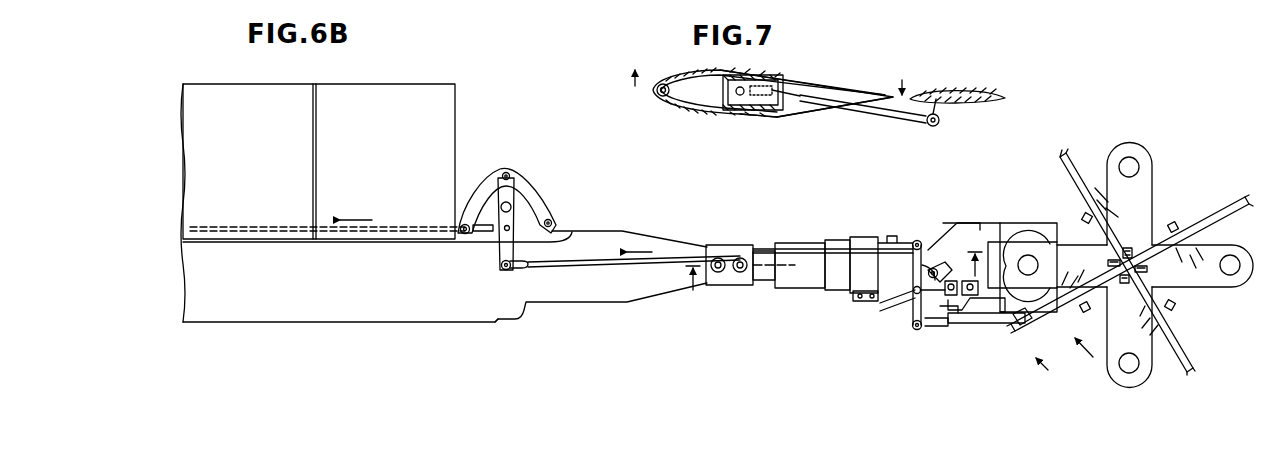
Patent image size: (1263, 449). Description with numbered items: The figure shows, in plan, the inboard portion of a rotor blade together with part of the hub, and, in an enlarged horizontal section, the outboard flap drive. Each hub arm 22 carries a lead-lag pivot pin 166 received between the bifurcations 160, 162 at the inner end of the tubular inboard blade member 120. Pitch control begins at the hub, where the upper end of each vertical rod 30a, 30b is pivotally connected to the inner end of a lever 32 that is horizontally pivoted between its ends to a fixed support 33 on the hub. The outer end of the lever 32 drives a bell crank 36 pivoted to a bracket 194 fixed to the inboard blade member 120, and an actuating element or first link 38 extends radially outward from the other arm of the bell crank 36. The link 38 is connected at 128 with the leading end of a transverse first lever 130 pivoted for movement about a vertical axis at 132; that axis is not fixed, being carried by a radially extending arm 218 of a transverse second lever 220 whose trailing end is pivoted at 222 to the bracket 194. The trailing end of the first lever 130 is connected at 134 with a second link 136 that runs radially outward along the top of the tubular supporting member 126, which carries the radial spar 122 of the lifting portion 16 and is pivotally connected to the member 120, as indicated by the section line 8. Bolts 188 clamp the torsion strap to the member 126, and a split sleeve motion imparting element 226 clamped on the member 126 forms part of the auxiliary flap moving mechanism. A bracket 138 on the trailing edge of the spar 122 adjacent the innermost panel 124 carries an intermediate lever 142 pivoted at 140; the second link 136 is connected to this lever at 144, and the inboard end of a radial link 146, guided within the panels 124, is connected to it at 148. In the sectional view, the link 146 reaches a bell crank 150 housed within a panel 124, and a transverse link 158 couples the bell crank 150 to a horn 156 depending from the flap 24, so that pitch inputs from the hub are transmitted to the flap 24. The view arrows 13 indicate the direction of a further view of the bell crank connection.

In FIG. 6B, the lifting portion 16 is at (240, 322).
In FIG. 7, the lifting portion 16 is at (673, 78).
In FIG. 6B, the radial spar 122 is at (463, 322).
In FIG. 7, the radial spar 122 is at (698, 112).
In FIG. 6B, the panel 124 is at (413, 95).
In FIG. 7, the panel 124 is at (862, 88).
In FIG. 6B, the radial link 146 is at (398, 226).
In FIG. 6B, the bracket 138 is at (484, 190).
In FIG. 6B, the pivot 140 is at (509, 173).
In FIG. 6B, the intermediate lever 142 is at (500, 248).
In FIG. 6B, the connection 148 is at (512, 225).
In FIG. 6B, the connection 144 is at (507, 272).
In FIG. 6B, the section view arrow 8 is at (831, 281).
In FIG. 6B, the bolt 188 is at (738, 273).
In FIG. 6B, the second link 136 is at (787, 247).
In FIG. 6B, the tubular supporting member 126 is at (834, 242).
In FIG. 6B, the motion imparting element 226 is at (860, 278).
In FIG. 6B, the pivotal axis 132 is at (895, 306).
In FIG. 6B, the connection 134 is at (917, 240).
In FIG. 6B, the first lever 130 is at (913, 308).
In FIG. 6B, the connection 128 is at (915, 331).
In FIG. 6B, the arm 218 is at (922, 265).
In FIG. 6B, the pivot 222 is at (933, 268).
In FIG. 6B, the inboard blade member 120 is at (958, 232).
In FIG. 6B, the bracket 194 is at (960, 278).
In FIG. 6B, the bifurcation 160 is at (1012, 232).
In FIG. 6B, the lead-lag pivot pin 166 is at (1033, 258).
In FIG. 6B, the bell crank 36 is at (990, 325).
In FIG. 6B, the bifurcation 162 is at (1000, 300).
In FIG. 6B, the second lever 220 is at (950, 320).
In FIG. 6B, the first link 38 is at (940, 328).
In FIG. 6B, the radial arm 22 is at (1148, 195).
In FIG. 6B, the lever 32 is at (1074, 182).
In FIG. 6B, the fixed support 33 is at (1105, 192).
In FIG. 6B, the vertical rod 30b is at (1128, 247).
In FIG. 6B, the vertical rod 30a is at (1128, 285).
In FIG. 6B, the view arrow 13 is at (1055, 361).
In FIG. 7, the bell crank 150 is at (762, 90).
In FIG. 7, the transverse link 158 is at (887, 115).
In FIG. 7, the horn 156 is at (945, 114).
In FIG. 7, the flap 24 is at (975, 92).